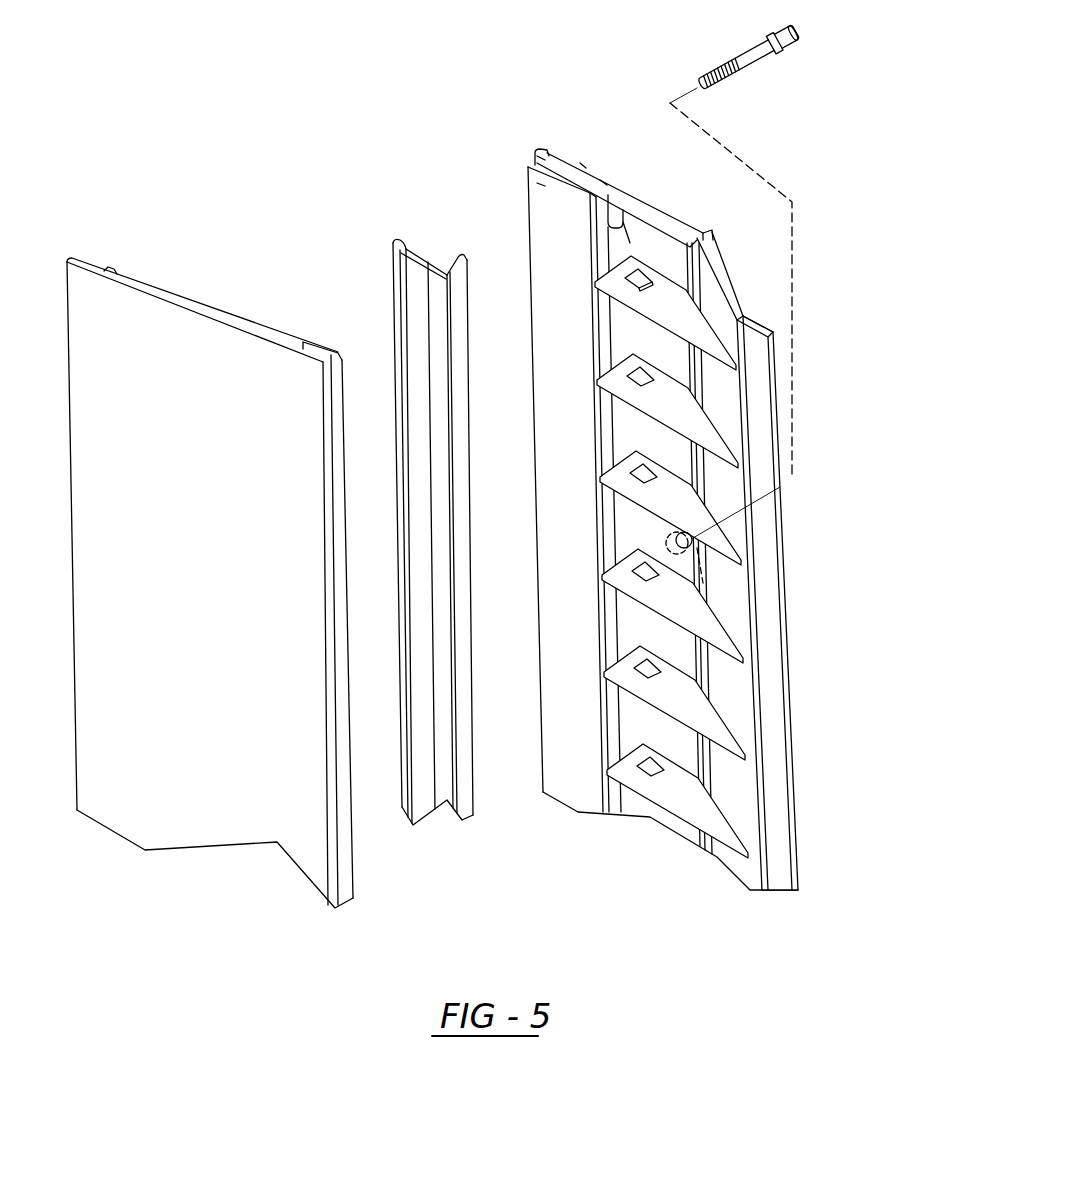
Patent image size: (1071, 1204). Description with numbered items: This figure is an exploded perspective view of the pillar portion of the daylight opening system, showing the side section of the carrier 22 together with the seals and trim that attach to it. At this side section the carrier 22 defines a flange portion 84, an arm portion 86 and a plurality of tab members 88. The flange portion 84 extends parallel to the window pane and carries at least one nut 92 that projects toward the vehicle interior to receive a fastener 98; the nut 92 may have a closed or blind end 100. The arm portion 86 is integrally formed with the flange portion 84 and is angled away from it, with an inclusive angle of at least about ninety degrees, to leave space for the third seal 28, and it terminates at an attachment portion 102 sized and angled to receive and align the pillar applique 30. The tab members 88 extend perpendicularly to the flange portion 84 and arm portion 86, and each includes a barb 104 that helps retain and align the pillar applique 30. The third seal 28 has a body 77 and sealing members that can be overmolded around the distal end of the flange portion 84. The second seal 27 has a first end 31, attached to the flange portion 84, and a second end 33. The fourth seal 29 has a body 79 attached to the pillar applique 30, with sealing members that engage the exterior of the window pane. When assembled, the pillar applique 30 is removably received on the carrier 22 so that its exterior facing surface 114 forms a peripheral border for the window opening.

The carrier 22 is at (663, 460).
The second seal 27 is at (636, 240).
The third seal 28 is at (540, 142).
The fourth seal 29 is at (392, 489).
The pillar applique 30 is at (206, 306).
The first end 31 is at (626, 205).
The second end 33 is at (613, 226).
The body 77 is at (537, 156).
The body 79 is at (445, 270).
The flange portion 84 is at (613, 207).
The arm portion 86 is at (778, 554).
The tab members 88 is at (606, 313).
The nut 92 is at (693, 547).
The fastener 98 is at (757, 53).
The blind end 100 is at (703, 583).
The attachment portion 102 is at (775, 757).
The barb 104 is at (632, 272).
The exterior facing surface 114 is at (218, 548).